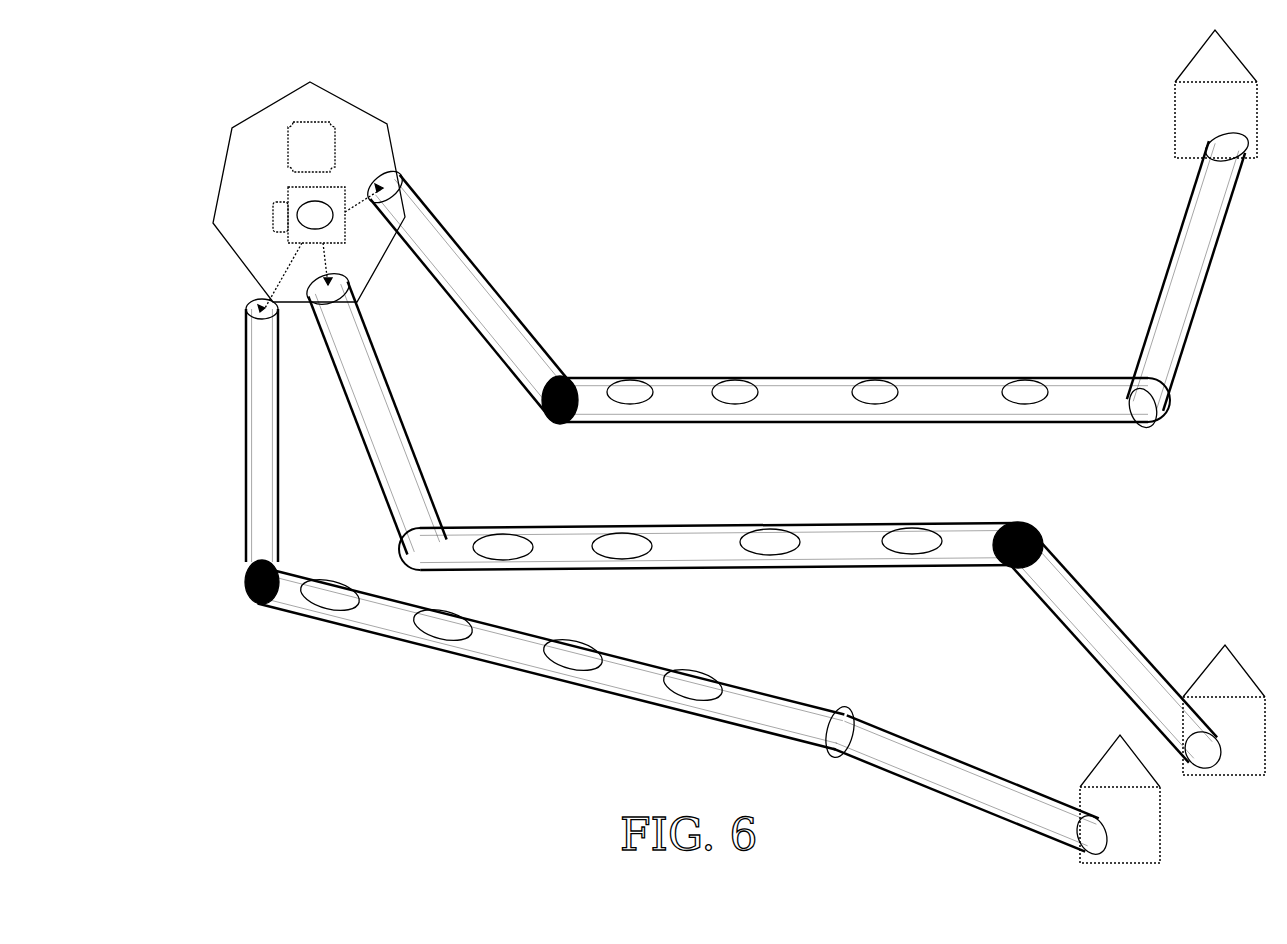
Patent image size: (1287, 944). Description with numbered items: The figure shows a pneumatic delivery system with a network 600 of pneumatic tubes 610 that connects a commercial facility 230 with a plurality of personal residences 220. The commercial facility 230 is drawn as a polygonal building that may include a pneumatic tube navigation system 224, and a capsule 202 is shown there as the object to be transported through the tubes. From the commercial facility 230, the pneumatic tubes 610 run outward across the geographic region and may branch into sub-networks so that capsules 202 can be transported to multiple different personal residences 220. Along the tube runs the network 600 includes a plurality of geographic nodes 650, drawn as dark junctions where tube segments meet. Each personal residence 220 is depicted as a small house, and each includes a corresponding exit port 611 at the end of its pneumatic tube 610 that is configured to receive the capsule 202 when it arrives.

The network 600 is at (242, 811).
The capsule 202 is at (286, 188).
The pneumatic tube navigation system 224 is at (340, 148).
The commercial facility 230 is at (368, 104).
The pneumatic tubes 610 is at (470, 212).
The exit port 611 is at (1207, 146).
The geographic nodes 650 is at (557, 424).
The personal residences 220 is at (1162, 86).